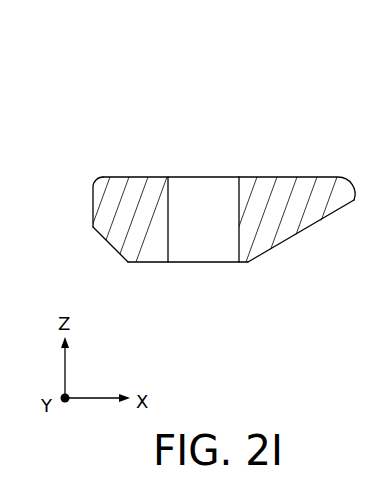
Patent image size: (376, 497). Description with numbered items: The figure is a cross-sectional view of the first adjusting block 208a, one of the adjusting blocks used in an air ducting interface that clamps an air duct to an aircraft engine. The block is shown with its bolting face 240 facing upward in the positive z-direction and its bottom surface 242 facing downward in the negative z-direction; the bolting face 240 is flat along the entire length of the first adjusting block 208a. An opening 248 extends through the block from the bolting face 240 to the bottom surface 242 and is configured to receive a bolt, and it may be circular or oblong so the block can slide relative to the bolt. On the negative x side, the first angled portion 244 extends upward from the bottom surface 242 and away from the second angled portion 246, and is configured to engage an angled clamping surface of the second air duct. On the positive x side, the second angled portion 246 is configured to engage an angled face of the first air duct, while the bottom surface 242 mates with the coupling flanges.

The first adjusting block 208a is at (148, 139).
The bolting face 240 is at (293, 176).
The opening 248 is at (204, 188).
The first angled portion 244 is at (117, 248).
The bottom surface 242 is at (243, 263).
The second angled portion 246 is at (297, 234).